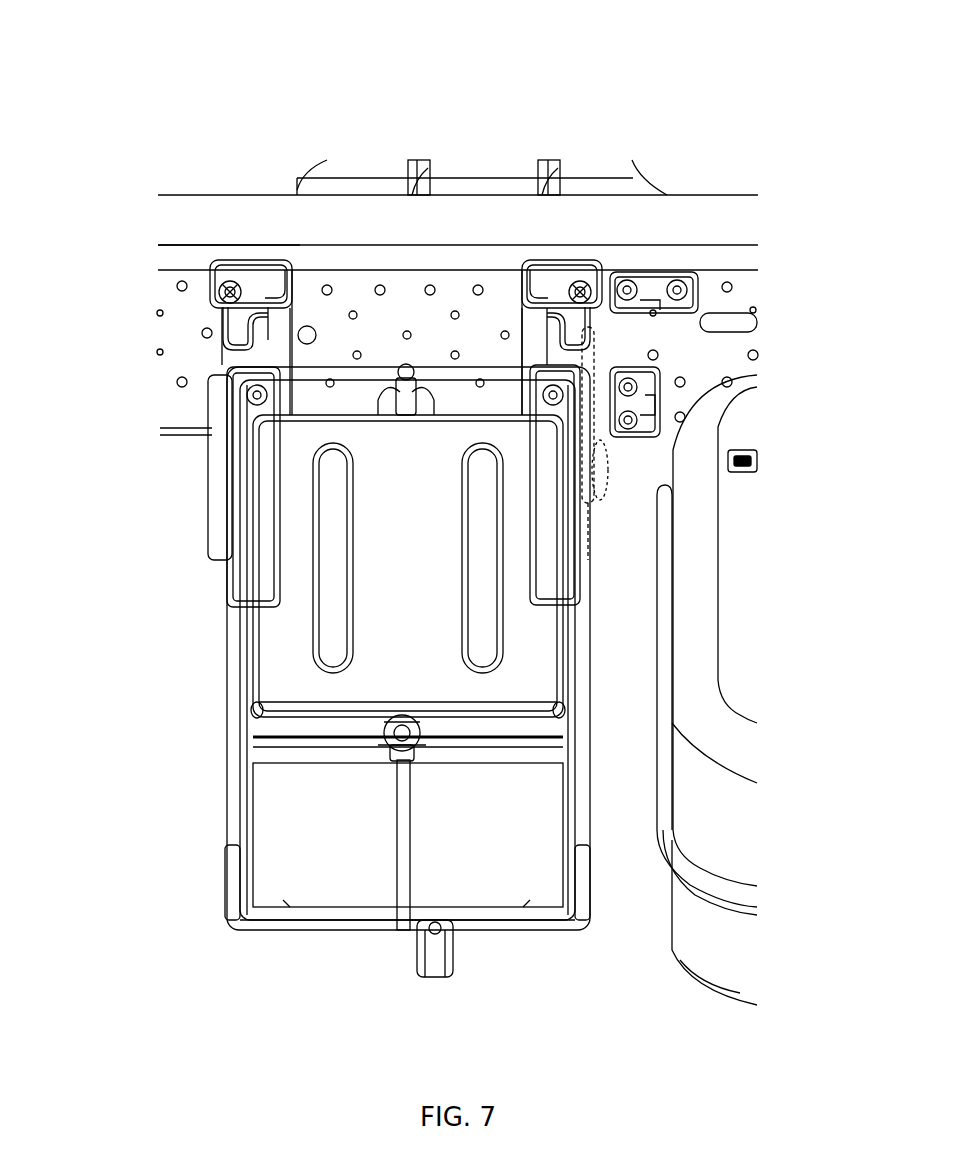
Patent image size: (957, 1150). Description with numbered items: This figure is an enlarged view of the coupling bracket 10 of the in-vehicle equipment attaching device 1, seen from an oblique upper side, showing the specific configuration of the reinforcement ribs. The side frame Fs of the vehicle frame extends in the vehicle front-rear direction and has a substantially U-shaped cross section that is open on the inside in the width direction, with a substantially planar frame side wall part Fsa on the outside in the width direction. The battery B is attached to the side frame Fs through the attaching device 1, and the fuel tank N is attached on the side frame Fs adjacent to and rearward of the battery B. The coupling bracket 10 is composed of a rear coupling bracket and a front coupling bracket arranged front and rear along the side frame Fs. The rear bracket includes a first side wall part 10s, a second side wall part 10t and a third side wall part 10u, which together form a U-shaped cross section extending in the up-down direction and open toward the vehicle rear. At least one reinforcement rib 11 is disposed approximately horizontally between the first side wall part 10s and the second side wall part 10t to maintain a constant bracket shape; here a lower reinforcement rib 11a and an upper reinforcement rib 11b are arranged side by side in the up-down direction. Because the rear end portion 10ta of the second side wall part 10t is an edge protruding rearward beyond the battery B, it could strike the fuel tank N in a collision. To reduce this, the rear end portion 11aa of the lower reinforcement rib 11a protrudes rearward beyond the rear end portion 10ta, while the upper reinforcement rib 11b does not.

The in-vehicle equipment attaching device 1 is at (392, 66).
The coupling bracket 10 is at (163, 116).
The first side wall part 10s is at (228, 280).
The second side wall part 10t is at (268, 333).
The third side wall part 10u is at (272, 294).
The rear end portion 10ta is at (598, 515).
The reinforcement rib 11 is at (95, 355).
The lower reinforcement rib 11a is at (217, 470).
The rear end portion 11aa is at (615, 492).
The upper reinforcement rib 11b is at (232, 338).
The side frame Fs is at (697, 215).
The frame side wall part Fsa is at (190, 297).
The battery B is at (337, 880).
The fuel tank N is at (703, 945).